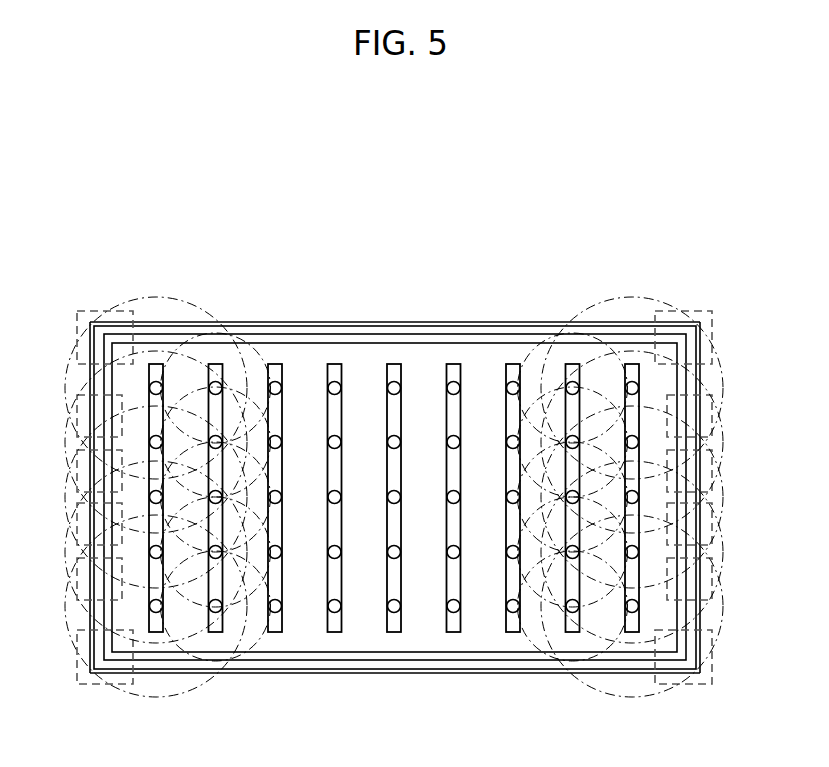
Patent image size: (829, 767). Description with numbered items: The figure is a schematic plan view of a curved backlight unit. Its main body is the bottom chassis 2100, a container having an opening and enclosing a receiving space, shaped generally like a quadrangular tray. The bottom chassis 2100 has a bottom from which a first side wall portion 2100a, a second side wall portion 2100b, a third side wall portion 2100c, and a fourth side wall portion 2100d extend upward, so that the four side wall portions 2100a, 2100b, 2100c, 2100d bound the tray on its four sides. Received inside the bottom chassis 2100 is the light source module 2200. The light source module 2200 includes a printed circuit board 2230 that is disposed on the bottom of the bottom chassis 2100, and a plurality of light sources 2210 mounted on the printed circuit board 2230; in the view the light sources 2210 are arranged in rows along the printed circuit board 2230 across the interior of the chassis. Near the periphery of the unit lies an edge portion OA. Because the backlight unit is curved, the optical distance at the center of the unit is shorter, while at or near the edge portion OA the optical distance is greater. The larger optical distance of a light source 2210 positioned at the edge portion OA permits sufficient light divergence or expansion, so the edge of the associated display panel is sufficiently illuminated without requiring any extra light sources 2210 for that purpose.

The bottom chassis 2100 is at (484, 408).
The first side wall portion 2100a is at (363, 674).
The second side wall portion 2100b is at (258, 321).
The third side wall portion 2100c is at (90, 385).
The fourth side wall portion 2100d is at (697, 385).
The light source module 2200 is at (475, 257).
The light sources 2210 is at (388, 388).
The printed circuit board 2230 is at (402, 373).
The edge portion OA is at (655, 303).